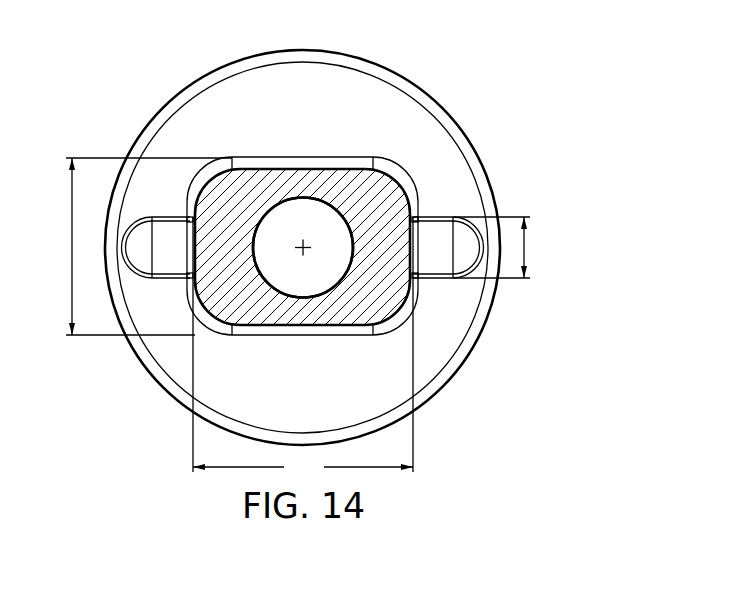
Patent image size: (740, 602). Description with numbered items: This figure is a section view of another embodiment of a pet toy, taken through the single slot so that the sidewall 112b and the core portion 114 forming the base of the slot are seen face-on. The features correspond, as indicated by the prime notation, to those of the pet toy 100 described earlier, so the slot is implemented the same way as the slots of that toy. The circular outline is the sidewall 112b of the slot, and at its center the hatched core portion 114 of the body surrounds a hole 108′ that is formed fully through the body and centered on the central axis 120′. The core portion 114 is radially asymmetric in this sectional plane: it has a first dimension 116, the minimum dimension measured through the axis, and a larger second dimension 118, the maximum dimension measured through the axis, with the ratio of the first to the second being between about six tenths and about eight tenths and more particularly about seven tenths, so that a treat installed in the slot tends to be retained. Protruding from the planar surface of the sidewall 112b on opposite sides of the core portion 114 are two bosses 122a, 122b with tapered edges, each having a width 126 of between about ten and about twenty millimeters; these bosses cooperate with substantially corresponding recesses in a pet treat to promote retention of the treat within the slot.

The pet toy 100 is at (119, 92).
The sidewall 112b is at (185, 113).
The core portion 114 is at (313, 173).
The hole 108′ is at (283, 197).
The central axis 120′ is at (312, 238).
The boss 122a is at (172, 230).
The boss 122b is at (433, 227).
The first dimension 116 is at (143, 246).
The second dimension 118 is at (303, 350).
The width 126 is at (524, 278).